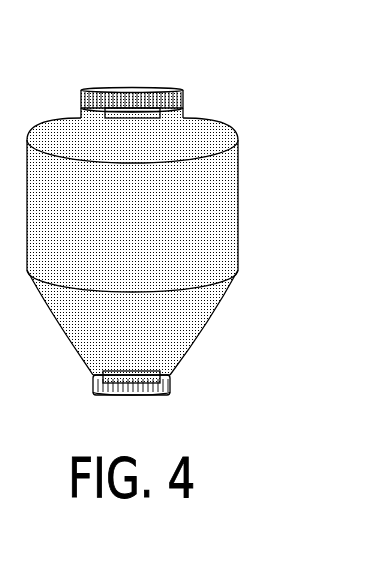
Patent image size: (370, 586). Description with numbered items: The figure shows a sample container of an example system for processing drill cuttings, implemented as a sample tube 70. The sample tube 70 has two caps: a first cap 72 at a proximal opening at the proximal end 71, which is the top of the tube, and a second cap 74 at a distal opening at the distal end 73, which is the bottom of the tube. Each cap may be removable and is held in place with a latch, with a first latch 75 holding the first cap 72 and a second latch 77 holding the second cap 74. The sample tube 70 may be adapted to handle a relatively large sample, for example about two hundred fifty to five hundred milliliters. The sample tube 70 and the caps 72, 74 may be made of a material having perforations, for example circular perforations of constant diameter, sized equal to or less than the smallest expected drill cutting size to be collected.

The sample tube 70 is at (157, 231).
The proximal end 71 is at (198, 137).
The first cap 72 is at (125, 86).
The distal end 73 is at (175, 353).
The second cap 74 is at (102, 382).
The first latch 75 is at (150, 110).
The second latch 77 is at (148, 377).